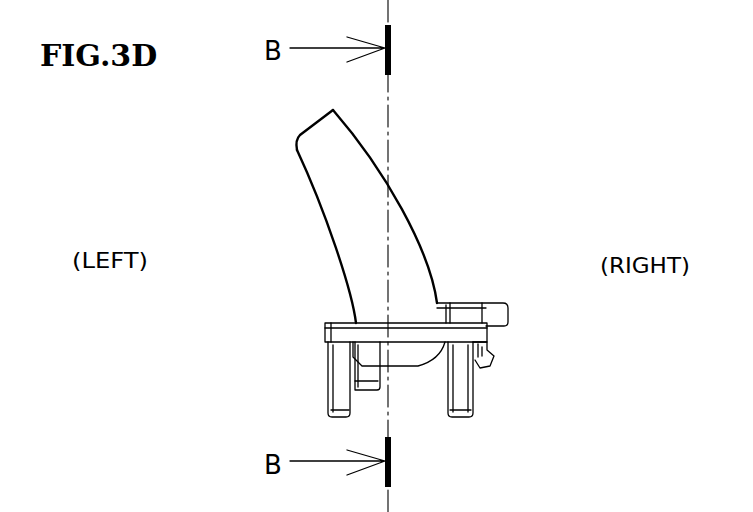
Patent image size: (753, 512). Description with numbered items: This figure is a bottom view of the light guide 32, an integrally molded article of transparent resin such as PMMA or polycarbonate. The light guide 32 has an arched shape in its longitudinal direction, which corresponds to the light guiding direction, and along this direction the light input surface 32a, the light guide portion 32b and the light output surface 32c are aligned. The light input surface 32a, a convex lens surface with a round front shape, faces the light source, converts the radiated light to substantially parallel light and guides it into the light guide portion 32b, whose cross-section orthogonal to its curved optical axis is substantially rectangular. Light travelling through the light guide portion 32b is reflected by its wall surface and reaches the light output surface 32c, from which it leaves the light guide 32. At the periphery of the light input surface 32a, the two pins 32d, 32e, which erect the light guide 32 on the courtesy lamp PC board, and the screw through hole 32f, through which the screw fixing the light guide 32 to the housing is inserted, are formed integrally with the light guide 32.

The light guide 32 is at (438, 150).
The light input surface 32a is at (397, 367).
The light guide portion 32b is at (397, 225).
The light output surface 32c is at (313, 125).
The pin 32d is at (330, 387).
The pin 32e is at (460, 390).
The screw through hole 32f is at (472, 315).